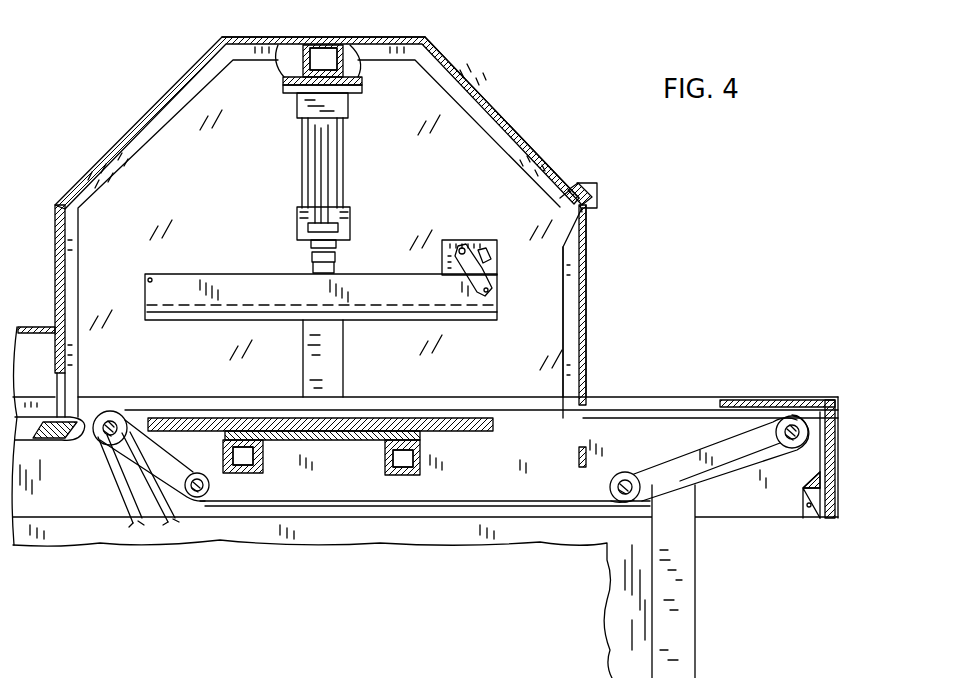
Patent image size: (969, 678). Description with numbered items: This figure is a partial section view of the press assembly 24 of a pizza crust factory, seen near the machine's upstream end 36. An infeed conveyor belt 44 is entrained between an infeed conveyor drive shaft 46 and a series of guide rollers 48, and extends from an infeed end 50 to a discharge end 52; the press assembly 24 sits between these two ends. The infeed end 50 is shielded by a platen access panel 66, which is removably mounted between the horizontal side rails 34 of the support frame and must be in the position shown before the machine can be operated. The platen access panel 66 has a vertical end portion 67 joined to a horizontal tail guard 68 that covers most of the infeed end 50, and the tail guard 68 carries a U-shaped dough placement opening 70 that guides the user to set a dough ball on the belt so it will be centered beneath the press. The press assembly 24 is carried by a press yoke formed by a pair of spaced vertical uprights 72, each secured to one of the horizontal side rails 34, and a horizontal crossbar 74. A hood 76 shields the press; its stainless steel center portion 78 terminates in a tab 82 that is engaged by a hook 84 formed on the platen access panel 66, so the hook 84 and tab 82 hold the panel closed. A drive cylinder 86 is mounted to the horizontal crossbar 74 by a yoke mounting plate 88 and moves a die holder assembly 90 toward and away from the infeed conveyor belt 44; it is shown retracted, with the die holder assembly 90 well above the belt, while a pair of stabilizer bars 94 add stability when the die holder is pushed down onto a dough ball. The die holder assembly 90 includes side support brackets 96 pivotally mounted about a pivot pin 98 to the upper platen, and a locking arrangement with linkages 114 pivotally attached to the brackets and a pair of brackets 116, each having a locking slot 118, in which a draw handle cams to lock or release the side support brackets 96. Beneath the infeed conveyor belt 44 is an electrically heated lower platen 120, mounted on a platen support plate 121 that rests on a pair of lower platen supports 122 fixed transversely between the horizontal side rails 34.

The press assembly 24 is at (448, 140).
The horizontal side rails 34 is at (718, 505).
The upstream end 36 is at (848, 398).
The infeed conveyor belt 44 is at (477, 503).
The infeed conveyor drive shaft 46 is at (110, 421).
The guide rollers 48 is at (775, 424).
The infeed end 50 is at (792, 415).
The discharge end 52 is at (100, 437).
The platen access panel 66 is at (680, 294).
The vertical end portion 67 is at (840, 512).
The horizontal tail guard 68 is at (740, 400).
The dough placement opening 70 is at (649, 400).
The vertical uprights 72 is at (335, 366).
The horizontal crossbar 74 is at (347, 62).
The hood 76 is at (142, 100).
The center portion 78 is at (234, 37).
The tab 82 is at (577, 197).
The hook 84 is at (597, 190).
The drive cylinder 86 is at (345, 165).
The yoke mounting plate 88 is at (290, 74).
The die holder assembly 90 is at (215, 275).
The stabilizer bars 94 is at (320, 160).
The side support brackets 96 is at (176, 275).
The pivot pin 98 is at (150, 278).
The linkages 114 is at (492, 271).
The brackets 116 is at (446, 246).
The locking slot 118 is at (478, 248).
The lower platen 120 is at (448, 420).
The platen support plate 121 is at (340, 442).
The lower platen supports 122 is at (428, 463).